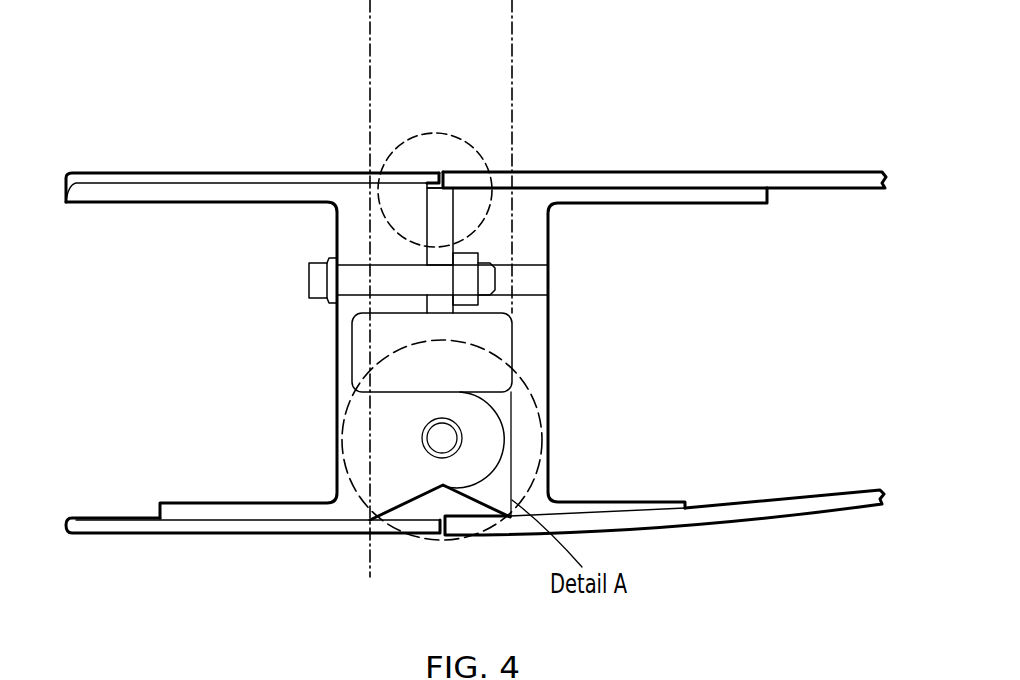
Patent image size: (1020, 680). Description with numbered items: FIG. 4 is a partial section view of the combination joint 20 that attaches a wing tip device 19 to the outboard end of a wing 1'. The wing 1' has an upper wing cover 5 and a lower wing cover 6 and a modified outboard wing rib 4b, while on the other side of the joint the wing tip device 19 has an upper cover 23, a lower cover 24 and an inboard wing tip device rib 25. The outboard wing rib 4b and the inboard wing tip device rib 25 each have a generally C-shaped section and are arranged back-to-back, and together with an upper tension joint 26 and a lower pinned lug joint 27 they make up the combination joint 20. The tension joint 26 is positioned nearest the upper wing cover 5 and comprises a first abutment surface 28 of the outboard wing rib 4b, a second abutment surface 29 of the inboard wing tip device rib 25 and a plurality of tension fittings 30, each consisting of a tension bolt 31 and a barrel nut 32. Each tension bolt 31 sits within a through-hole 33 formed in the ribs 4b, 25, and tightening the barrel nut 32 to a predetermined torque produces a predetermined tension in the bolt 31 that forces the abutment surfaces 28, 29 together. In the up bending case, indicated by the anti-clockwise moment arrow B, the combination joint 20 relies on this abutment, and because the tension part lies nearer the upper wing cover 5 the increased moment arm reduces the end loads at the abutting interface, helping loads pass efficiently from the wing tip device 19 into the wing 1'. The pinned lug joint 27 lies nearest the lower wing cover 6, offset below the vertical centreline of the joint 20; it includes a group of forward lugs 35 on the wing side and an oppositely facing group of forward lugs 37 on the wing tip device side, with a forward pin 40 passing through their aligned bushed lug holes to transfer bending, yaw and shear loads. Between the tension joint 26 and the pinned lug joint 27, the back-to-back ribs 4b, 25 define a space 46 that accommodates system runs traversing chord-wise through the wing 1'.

The wing 1' is at (85, 95).
The upper wing cover 5 is at (172, 178).
The lower wing cover 6 is at (190, 530).
The outboard wing rib 4b is at (357, 215).
The wing tip device 19 is at (722, 117).
The combination joint 20 is at (617, 92).
The upper cover 23 is at (752, 180).
The lower cover 24 is at (766, 510).
The inboard wing tip device rib 25 is at (538, 372).
The tension joint 26 is at (227, 277).
The pinned lug joint 27 is at (303, 432).
The first abutment surface 28 is at (418, 200).
The second abutment surface 29 is at (430, 200).
The tension fitting 30 is at (373, 287).
The tension bolt 31 is at (352, 281).
The barrel nut 32 is at (467, 267).
The through-hole 33 is at (407, 263).
The forward lugs 35 is at (390, 472).
The forward lugs 37 is at (488, 490).
The forward pin 40 is at (448, 440).
The space 46 is at (500, 332).
The anti-clockwise moment arrow B is at (810, 302).